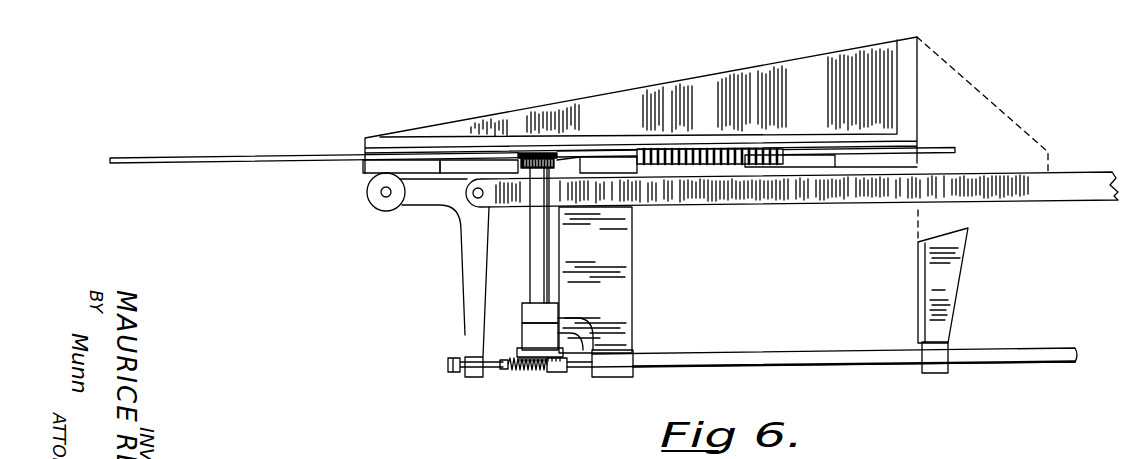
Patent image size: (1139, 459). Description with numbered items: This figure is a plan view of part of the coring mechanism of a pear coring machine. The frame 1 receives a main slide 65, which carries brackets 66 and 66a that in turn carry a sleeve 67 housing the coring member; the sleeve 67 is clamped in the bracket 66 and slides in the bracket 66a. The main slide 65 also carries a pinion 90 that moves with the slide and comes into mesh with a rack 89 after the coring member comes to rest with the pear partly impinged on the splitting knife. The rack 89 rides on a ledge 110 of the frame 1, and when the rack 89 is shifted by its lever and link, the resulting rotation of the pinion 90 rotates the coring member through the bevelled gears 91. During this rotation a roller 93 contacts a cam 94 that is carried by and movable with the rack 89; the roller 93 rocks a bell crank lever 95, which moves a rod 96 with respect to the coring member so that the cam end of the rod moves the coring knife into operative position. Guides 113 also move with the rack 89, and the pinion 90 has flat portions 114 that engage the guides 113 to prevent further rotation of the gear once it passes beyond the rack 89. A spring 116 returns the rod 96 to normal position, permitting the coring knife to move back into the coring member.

The frame 1 is at (823, 63).
The main slide 65 is at (1087, 177).
The bracket 66 is at (623, 297).
The bracket 66a is at (955, 282).
The sleeve 67 is at (780, 355).
The rack 89 is at (692, 152).
The pinion 90 is at (562, 157).
The bevelled gears 91 is at (563, 373).
The roller 93 is at (390, 209).
The cam 94 is at (465, 165).
The bell crank lever 95 is at (472, 302).
The rod 96 is at (503, 370).
The ledge 110 is at (378, 166).
The guides 113 is at (252, 158).
The flat portions 114 is at (536, 153).
The spring 116 is at (535, 371).